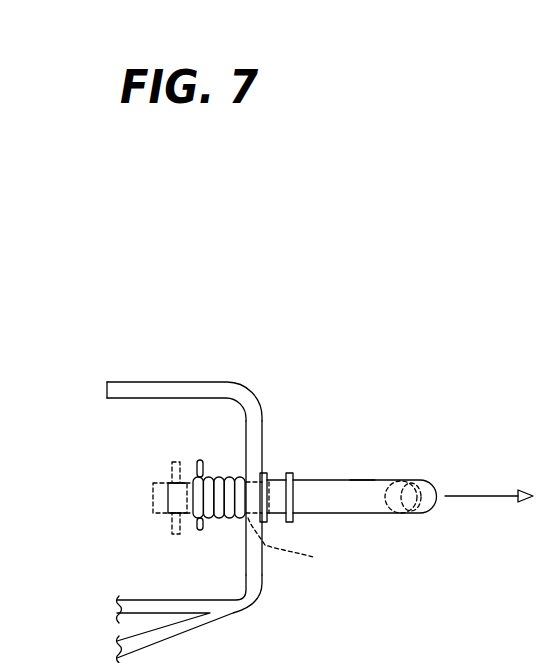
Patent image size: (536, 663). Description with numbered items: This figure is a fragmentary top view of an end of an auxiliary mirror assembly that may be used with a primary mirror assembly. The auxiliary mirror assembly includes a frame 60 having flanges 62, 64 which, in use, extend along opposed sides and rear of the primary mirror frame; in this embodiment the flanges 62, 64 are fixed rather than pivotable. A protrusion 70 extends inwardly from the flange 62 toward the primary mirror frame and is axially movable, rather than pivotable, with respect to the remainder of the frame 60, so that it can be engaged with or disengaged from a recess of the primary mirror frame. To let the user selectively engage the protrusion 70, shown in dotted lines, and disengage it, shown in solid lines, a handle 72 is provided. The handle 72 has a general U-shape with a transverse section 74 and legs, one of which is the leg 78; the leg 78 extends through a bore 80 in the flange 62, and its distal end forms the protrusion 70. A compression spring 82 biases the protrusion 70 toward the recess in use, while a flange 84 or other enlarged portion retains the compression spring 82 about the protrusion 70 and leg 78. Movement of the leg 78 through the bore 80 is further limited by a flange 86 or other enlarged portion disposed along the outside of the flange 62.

The frame 60 is at (257, 583).
The flange 62 is at (250, 430).
The flange 64 is at (163, 390).
The protrusion 70 is at (180, 497).
The handle 72 is at (372, 513).
The transverse section 74 is at (427, 502).
The leg 78 is at (362, 479).
The bore 80 is at (290, 537).
The compression spring 82 is at (209, 520).
The flange 84 is at (199, 522).
The flange 86 is at (290, 472).